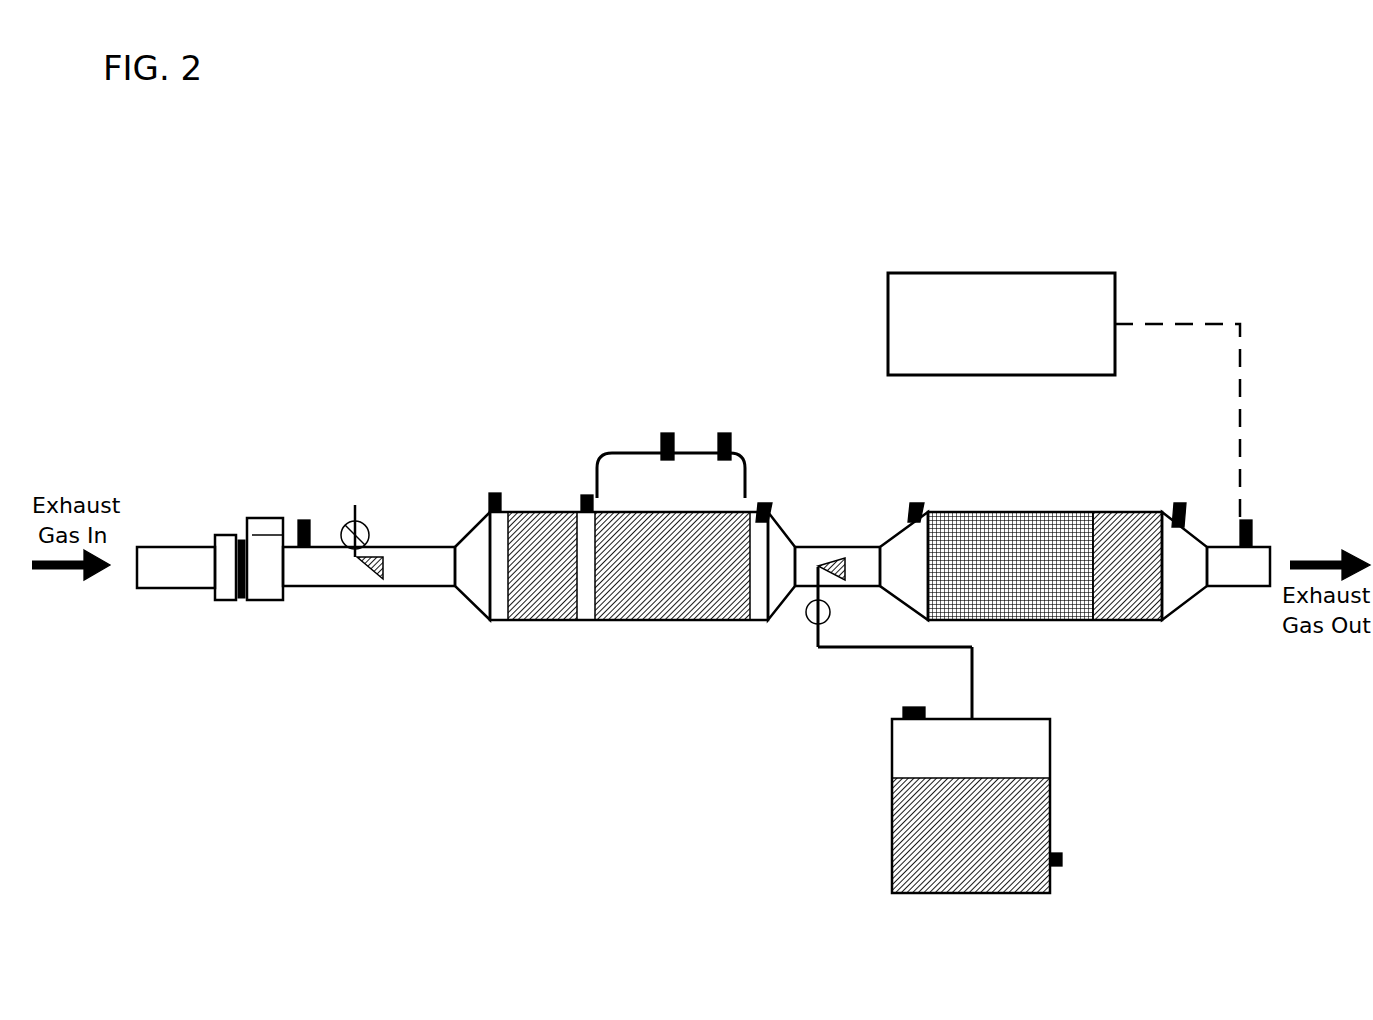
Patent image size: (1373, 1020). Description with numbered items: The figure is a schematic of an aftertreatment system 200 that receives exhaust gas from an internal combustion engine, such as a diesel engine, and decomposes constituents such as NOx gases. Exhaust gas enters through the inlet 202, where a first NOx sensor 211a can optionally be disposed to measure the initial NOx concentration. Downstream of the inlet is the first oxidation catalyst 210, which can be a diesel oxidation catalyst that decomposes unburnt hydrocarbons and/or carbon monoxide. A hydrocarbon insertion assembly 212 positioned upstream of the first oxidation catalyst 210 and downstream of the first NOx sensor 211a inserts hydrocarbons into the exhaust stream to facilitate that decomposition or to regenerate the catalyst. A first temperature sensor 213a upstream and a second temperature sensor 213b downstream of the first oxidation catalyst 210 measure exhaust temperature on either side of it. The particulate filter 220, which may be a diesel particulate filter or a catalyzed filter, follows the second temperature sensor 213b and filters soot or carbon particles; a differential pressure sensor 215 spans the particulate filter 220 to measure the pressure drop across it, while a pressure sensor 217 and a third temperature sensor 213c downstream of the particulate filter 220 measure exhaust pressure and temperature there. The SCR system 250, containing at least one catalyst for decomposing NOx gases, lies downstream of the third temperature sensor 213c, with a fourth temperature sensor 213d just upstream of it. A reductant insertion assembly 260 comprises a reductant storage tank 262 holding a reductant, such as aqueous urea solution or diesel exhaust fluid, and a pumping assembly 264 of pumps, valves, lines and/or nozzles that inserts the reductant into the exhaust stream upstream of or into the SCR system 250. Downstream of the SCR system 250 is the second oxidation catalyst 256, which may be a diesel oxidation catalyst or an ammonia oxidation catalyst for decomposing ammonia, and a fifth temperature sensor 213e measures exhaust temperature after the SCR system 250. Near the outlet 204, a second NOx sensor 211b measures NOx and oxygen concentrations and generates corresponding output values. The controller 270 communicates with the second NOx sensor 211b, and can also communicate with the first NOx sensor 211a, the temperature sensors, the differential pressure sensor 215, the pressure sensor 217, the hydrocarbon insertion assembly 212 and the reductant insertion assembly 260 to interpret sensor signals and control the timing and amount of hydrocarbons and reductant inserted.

The aftertreatment system 200 is at (878, 160).
The inlet 202 is at (178, 563).
The outlet 204 is at (1238, 575).
The first oxidation catalyst 210 is at (535, 608).
The first NOx sensor 211a is at (303, 523).
The second NOx sensor 211b is at (1248, 520).
The hydrocarbon insertion assembly 212 is at (365, 528).
The first temperature sensor 213a is at (500, 481).
The second temperature sensor 213b is at (585, 498).
The third temperature sensor 213c is at (772, 504).
The fourth temperature sensor 213d is at (918, 504).
The fifth temperature sensor 213e is at (1176, 505).
The differential pressure sensor 215 is at (667, 433).
The pressure sensor 217 is at (725, 435).
The particulate filter 220 is at (662, 615).
The SCR system 250 is at (1030, 537).
The second oxidation catalyst 256 is at (1130, 620).
The reductant insertion assembly 260 is at (1095, 822).
The reductant storage tank 262 is at (1000, 890).
The pumping assembly 264 is at (810, 625).
The controller 270 is at (1064, 396).